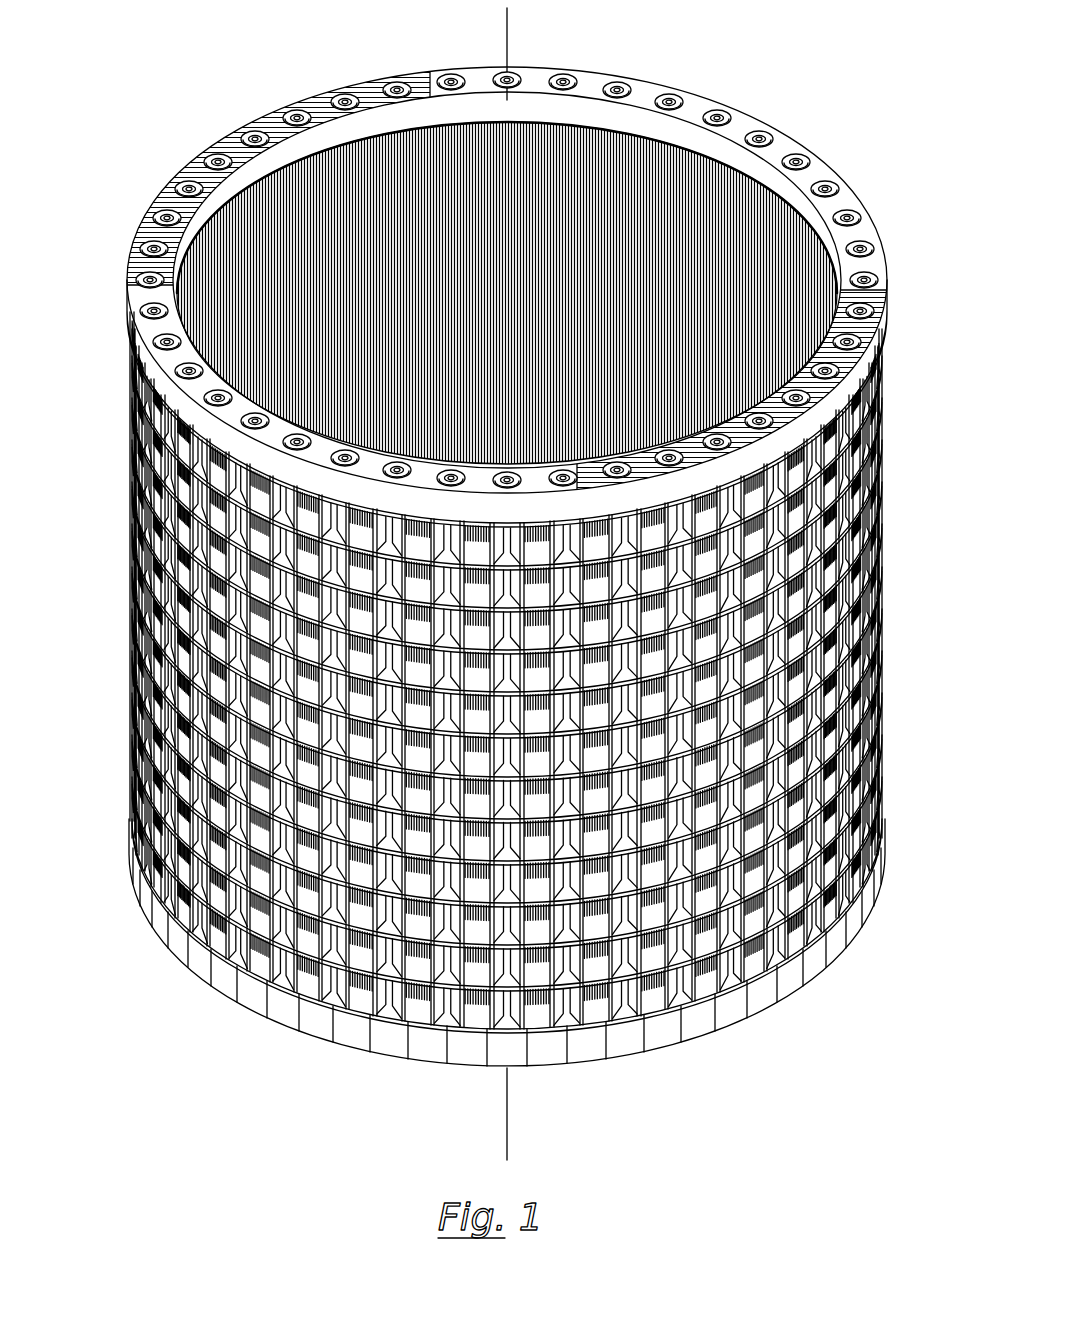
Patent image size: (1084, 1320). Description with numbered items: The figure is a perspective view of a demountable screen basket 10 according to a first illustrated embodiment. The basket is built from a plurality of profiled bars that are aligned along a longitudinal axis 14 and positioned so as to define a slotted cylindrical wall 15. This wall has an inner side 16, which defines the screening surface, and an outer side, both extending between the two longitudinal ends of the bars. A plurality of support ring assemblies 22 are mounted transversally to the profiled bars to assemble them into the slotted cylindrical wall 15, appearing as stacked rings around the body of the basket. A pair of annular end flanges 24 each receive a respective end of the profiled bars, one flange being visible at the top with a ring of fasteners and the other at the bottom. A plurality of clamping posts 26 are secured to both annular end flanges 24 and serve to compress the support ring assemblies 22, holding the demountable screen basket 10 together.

The demountable screen basket 10 is at (203, 100).
The longitudinal axis 14 is at (507, 35).
The slotted cylindrical wall 15 is at (318, 290).
The inner side 16 is at (672, 205).
The support ring assemblies 22 is at (825, 540).
The annular end flanges 24 is at (862, 322).
The clamping posts 26 is at (192, 658).